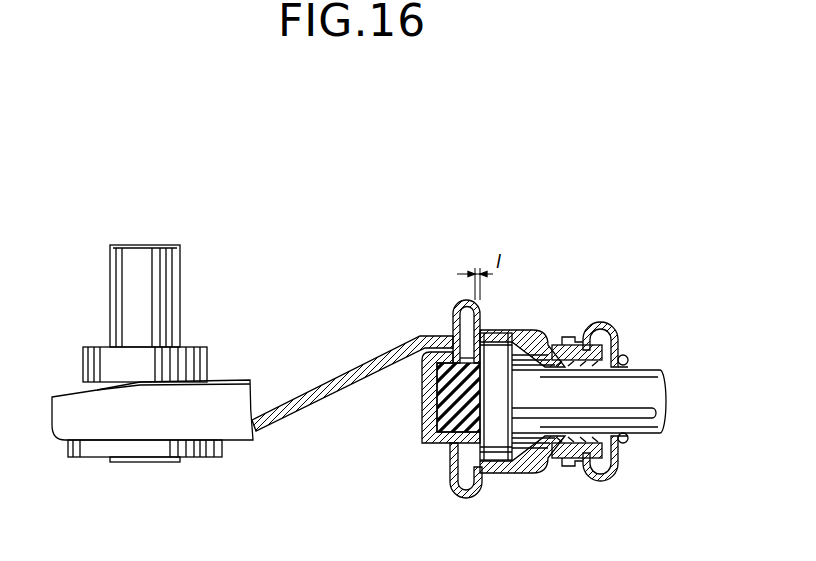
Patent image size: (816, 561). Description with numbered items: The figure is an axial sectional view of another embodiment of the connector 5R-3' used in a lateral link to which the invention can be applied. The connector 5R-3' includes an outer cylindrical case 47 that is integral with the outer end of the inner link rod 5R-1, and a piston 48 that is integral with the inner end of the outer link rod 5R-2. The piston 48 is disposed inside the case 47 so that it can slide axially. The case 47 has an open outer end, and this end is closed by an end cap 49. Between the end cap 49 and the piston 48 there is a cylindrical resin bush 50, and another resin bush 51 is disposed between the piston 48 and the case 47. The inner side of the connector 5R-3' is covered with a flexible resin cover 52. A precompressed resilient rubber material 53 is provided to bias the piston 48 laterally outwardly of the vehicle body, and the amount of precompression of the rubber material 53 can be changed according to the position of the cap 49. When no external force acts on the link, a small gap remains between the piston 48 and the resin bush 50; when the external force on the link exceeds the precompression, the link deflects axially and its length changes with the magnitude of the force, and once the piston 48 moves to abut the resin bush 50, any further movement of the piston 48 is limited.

The inner link rod 5R-1 is at (328, 383).
The outer link rod 5R-2 is at (645, 370).
The connector 5R-3' is at (577, 301).
The outer cylindrical case 47 is at (523, 470).
The piston 48 is at (508, 462).
The end cap 49 is at (420, 405).
The cylindrical resin bush 50 is at (460, 326).
The resin bush 51 is at (540, 468).
The flexible resin cover 52 is at (617, 466).
The precompressed resilient rubber material 53 is at (443, 433).